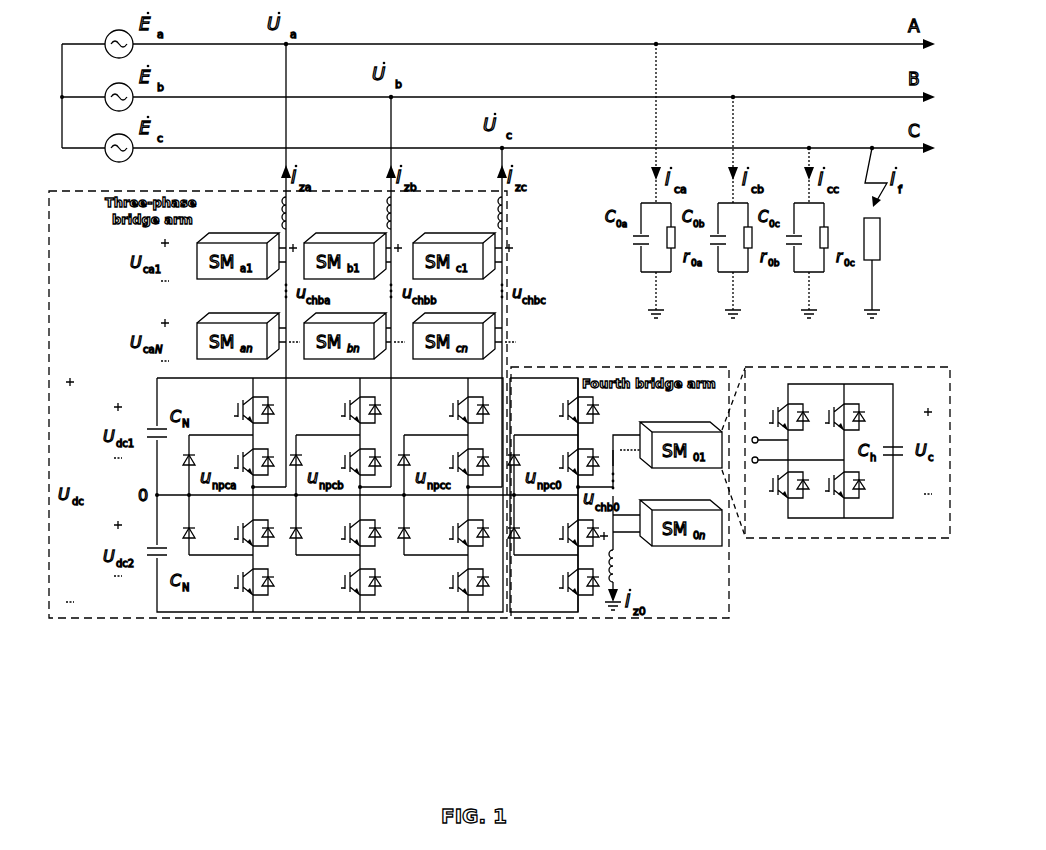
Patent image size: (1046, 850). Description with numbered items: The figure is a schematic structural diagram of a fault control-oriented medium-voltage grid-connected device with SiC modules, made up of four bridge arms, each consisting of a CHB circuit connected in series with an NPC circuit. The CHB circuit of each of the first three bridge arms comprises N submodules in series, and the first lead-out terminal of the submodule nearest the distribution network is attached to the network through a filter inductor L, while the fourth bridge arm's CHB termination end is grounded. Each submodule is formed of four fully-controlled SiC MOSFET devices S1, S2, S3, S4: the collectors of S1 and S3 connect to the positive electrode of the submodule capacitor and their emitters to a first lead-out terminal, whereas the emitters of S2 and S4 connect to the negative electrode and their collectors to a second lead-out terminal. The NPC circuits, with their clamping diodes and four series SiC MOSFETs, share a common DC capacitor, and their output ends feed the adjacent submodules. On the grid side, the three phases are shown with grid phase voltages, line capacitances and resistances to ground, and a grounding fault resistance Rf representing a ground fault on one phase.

The filter inductor L is at (465, 389).
The first fully-controlled SiC MOSFET device S1 is at (783, 409).
The second fully-controlled SiC MOSFET device S2 is at (783, 495).
The third fully-controlled SiC MOSFET device S3 is at (855, 409).
The fourth fully-controlled SiC MOSFET device S4 is at (855, 495).
The grounding fault resistance Rf is at (888, 233).